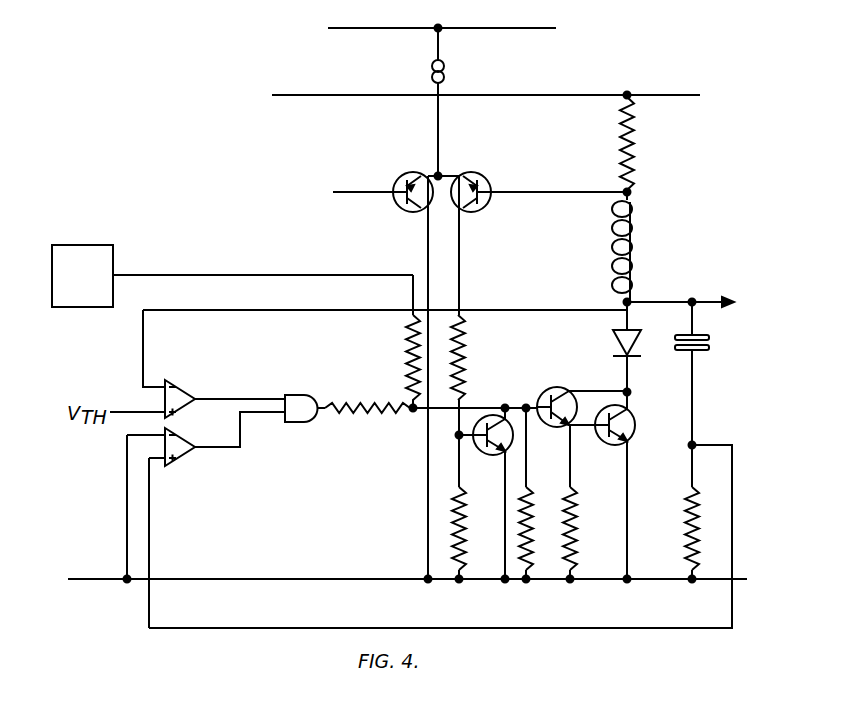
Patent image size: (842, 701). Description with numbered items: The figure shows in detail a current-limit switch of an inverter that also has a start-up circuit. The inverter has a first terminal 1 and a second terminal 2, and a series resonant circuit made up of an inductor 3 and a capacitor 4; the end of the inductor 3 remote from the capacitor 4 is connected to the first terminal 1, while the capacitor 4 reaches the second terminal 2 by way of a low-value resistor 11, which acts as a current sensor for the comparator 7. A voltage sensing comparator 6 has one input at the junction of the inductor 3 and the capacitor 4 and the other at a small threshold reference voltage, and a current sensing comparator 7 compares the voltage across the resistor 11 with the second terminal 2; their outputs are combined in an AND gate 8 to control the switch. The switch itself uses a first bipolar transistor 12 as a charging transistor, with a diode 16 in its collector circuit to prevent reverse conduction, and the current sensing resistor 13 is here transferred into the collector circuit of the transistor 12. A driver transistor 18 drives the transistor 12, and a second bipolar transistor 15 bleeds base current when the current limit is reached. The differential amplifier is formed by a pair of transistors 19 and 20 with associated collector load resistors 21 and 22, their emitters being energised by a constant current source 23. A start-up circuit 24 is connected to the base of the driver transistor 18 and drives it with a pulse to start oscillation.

The first terminal 1 is at (645, 95).
The second terminal 2 is at (738, 579).
The inductor 3 is at (640, 264).
The capacitor 4 is at (710, 344).
The voltage sensing comparator 6 is at (183, 396).
The current sensing comparator 7 is at (185, 464).
The AND gate 8 is at (303, 395).
The low-value resistor 11 is at (700, 510).
The first bipolar transistor 12 is at (636, 430).
The current sensing resistor 13 is at (636, 153).
The second bipolar transistor 15 is at (500, 457).
The diode 16 is at (613, 340).
The driver transistor 18 is at (553, 390).
The transistor 19 is at (404, 176).
The transistor 20 is at (496, 176).
The collector load resistor 21 is at (466, 356).
The collector load resistor 22 is at (455, 530).
The constant current source 23 is at (445, 78).
The start-up circuit 24 is at (103, 260).